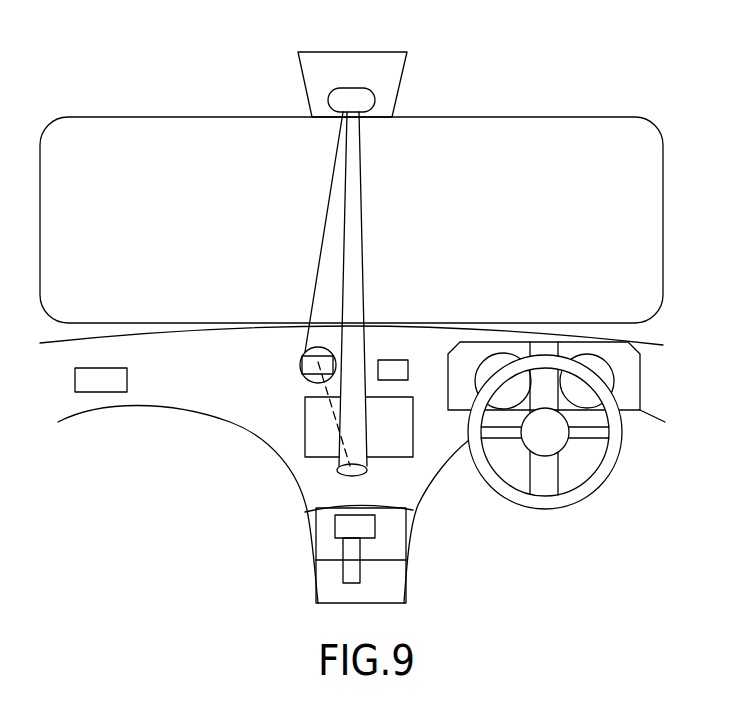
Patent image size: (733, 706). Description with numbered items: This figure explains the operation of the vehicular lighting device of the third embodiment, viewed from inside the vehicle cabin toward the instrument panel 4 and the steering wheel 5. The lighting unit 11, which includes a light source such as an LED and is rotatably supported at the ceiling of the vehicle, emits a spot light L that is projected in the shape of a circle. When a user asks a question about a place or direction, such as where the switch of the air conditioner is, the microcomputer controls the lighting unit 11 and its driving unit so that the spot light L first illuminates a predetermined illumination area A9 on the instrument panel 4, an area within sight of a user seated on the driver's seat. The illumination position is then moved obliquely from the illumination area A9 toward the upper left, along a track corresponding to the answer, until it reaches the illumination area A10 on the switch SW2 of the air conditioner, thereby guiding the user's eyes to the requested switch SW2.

The instrument panel 4 is at (228, 362).
The lighting unit 11 is at (363, 88).
The spot light L is at (363, 240).
The switch of an air conditioner SW2 is at (305, 382).
The illumination area A10 is at (300, 368).
The illumination area A9 is at (362, 477).
The steering wheel 5 is at (605, 480).